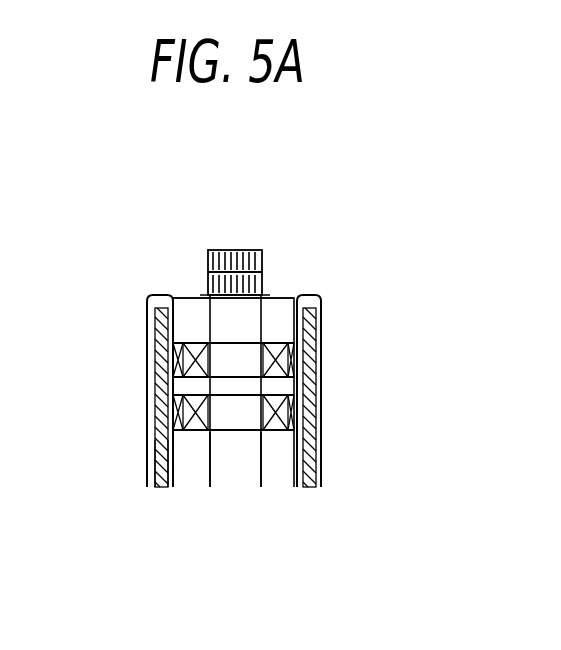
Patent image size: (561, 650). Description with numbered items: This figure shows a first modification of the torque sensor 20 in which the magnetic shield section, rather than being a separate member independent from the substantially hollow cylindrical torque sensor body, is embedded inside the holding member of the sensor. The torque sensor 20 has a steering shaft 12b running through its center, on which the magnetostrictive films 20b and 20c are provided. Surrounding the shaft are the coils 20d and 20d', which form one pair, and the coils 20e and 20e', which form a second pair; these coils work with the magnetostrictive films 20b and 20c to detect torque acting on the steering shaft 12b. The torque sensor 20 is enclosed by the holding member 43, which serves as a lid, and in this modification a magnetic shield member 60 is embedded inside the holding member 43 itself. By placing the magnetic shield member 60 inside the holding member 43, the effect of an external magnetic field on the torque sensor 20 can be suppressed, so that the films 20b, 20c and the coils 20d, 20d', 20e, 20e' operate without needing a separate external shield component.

The torque sensor 20 is at (192, 312).
The steering shaft 12b is at (243, 347).
The magnetostrictive film 20b is at (263, 307).
The magnetostrictive film 20c is at (247, 425).
The coil 20d is at (170, 333).
The coil 20d' is at (107, 397).
The coil 20e is at (173, 427).
The coil 20e' is at (110, 482).
The holding member 43 is at (338, 312).
The magnetic shield member 60 is at (310, 360).